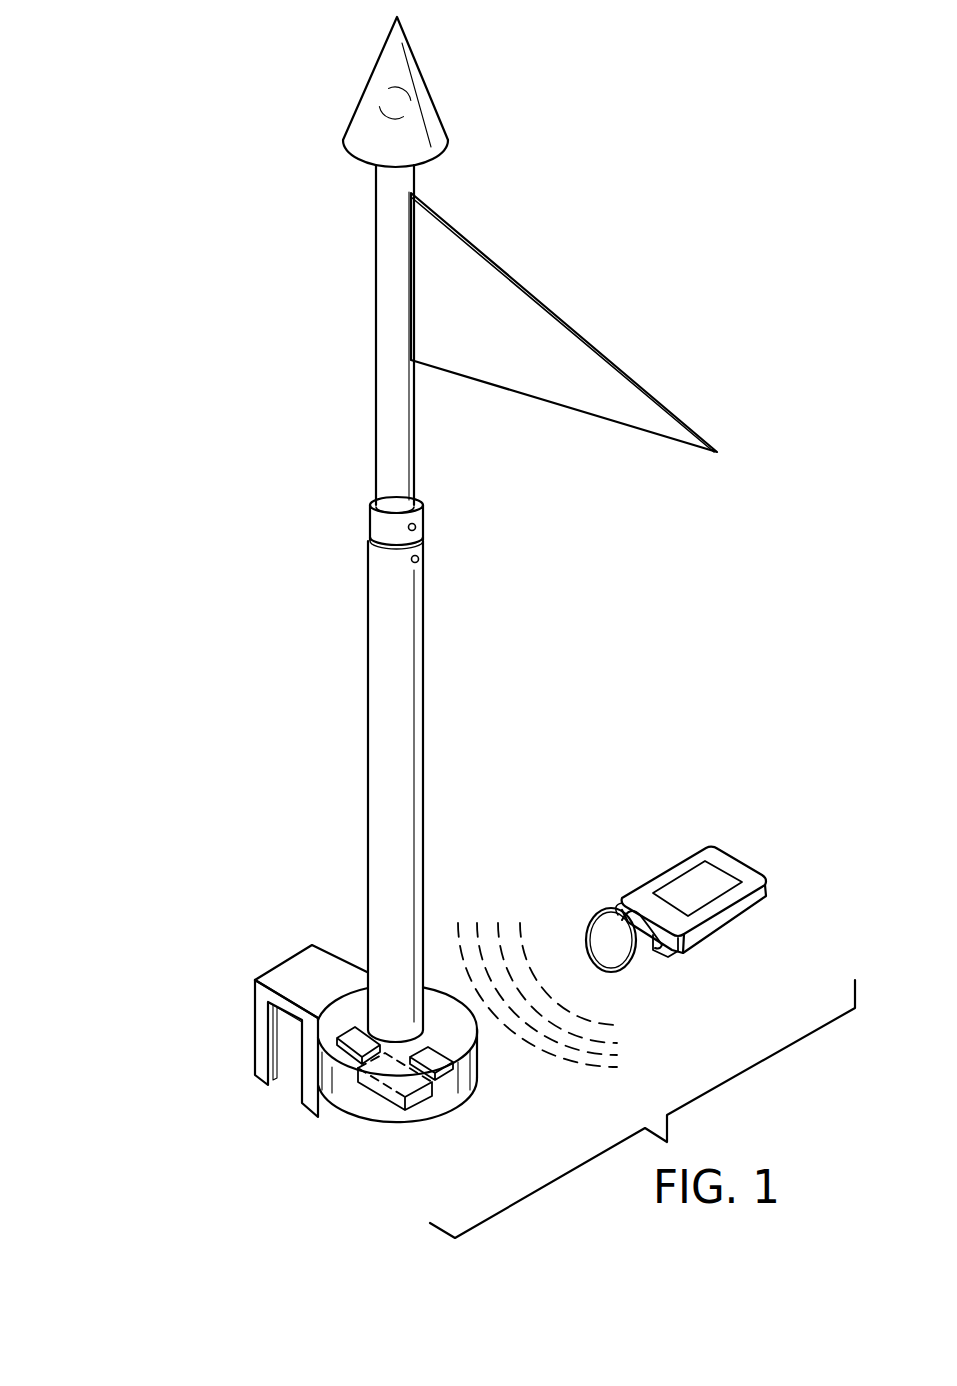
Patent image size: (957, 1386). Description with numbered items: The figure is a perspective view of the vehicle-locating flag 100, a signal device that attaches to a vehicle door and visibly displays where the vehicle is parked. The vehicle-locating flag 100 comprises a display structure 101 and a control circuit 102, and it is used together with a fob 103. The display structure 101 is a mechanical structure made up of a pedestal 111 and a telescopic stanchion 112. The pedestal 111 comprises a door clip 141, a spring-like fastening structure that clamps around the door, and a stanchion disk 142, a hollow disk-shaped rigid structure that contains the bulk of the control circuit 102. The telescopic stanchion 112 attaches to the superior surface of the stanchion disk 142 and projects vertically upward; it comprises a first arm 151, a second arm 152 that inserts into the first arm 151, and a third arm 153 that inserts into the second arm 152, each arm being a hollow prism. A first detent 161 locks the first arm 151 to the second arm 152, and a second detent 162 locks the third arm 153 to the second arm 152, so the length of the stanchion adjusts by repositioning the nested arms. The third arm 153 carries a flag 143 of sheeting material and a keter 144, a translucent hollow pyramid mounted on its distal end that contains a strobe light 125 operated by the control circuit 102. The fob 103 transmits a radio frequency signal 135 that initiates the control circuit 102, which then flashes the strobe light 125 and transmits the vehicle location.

The vehicle-locating flag 100 is at (128, 124).
The display structure 101 is at (437, 188).
The control circuit 102 is at (422, 1093).
The fob 103 is at (745, 875).
The pedestal 111 is at (247, 1083).
The telescopic stanchion 112 is at (425, 690).
The strobe light 125 is at (393, 99).
The radio frequency signal 135 is at (610, 1010).
The door clip 141 is at (265, 1027).
The stanchion disk 142 is at (360, 1103).
The flag 143 is at (541, 347).
The keter 144 is at (407, 72).
The first arm 151 is at (370, 832).
The second arm 152 is at (373, 510).
The third arm 153 is at (375, 410).
The first detent 161 is at (418, 558).
The second detent 162 is at (418, 527).